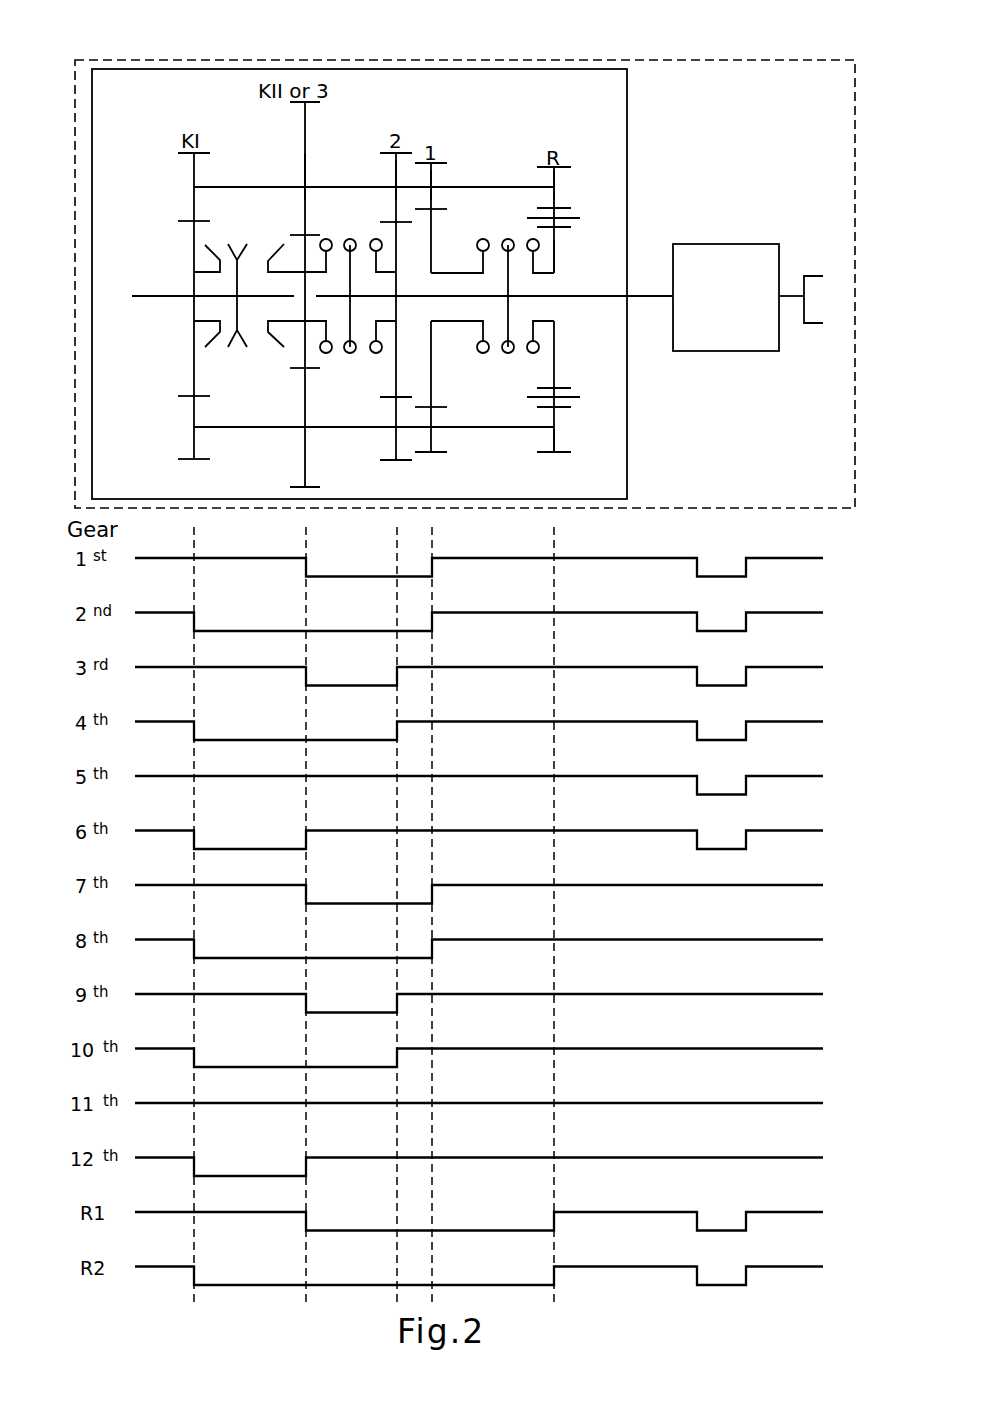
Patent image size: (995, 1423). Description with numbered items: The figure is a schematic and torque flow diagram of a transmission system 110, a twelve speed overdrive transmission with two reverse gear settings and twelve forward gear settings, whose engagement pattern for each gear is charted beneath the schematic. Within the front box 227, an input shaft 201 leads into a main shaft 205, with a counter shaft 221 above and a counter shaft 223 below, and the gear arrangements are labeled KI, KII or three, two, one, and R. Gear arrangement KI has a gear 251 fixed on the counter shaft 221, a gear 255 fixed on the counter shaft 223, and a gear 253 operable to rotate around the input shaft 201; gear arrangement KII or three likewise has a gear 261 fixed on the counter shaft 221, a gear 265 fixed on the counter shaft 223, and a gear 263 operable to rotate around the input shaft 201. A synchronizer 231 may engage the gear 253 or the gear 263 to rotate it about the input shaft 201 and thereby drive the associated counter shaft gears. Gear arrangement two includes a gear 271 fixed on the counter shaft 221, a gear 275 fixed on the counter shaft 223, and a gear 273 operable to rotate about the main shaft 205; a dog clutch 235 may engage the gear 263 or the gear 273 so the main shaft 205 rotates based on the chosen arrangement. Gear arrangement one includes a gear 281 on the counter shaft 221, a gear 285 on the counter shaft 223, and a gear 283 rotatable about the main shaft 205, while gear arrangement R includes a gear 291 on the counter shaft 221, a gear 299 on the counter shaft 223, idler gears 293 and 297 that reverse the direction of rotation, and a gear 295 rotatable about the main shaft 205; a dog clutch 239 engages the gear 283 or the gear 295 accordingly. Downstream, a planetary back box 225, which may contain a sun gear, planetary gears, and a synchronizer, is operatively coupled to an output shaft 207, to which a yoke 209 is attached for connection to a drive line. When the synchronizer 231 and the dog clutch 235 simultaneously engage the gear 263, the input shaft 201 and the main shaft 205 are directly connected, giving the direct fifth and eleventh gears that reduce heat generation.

The transmission system 110 is at (80, 60).
The front box 227 is at (192, 69).
The input shaft 201 is at (157, 292).
The main shaft 205 is at (603, 297).
The output shaft 207 is at (788, 290).
The yoke 209 is at (817, 323).
The back box 225 is at (717, 244).
The counter shaft 221 is at (278, 187).
The counter shaft 223 is at (270, 428).
The synchronizer 231 is at (239, 357).
The dog clutch 235 is at (350, 362).
The dog clutch 239 is at (508, 362).
The gear 251 is at (192, 200).
The gear 253 is at (193, 362).
The gear 255 is at (193, 440).
The gear 261 is at (305, 166).
The gear 263 is at (305, 247).
The gear 265 is at (305, 437).
The gear 271 is at (396, 169).
The gear 273 is at (397, 238).
The gear 275 is at (395, 438).
The gear 281 is at (432, 177).
The gear 283 is at (432, 243).
The gear 285 is at (432, 440).
The gear 291 is at (556, 178).
The idler gear 293 is at (572, 218).
The gear 295 is at (555, 253).
The idler gear 297 is at (572, 397).
The gear 299 is at (555, 442).